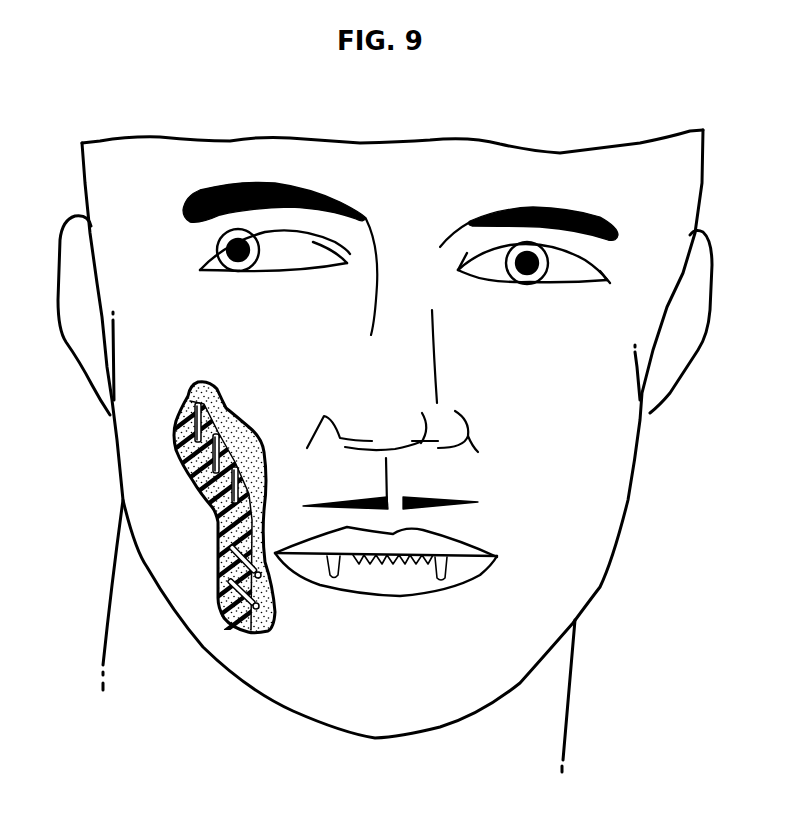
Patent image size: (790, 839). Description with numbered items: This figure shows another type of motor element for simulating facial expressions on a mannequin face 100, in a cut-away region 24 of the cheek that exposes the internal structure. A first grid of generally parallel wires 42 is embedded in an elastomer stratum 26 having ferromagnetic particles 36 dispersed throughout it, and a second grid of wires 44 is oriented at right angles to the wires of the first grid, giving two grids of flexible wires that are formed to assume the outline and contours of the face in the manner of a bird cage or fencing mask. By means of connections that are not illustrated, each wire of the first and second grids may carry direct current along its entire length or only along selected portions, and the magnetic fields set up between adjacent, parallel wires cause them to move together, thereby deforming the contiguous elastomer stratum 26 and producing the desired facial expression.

The adhesive patch 24 is at (253, 447).
The elastomer stratum 26 is at (197, 480).
The ferromagnetic particles 36 is at (221, 538).
The first grid of generally parallel wires 42 is at (201, 413).
The second grid of wires 44 is at (272, 566).
The face of patient 100 is at (603, 575).